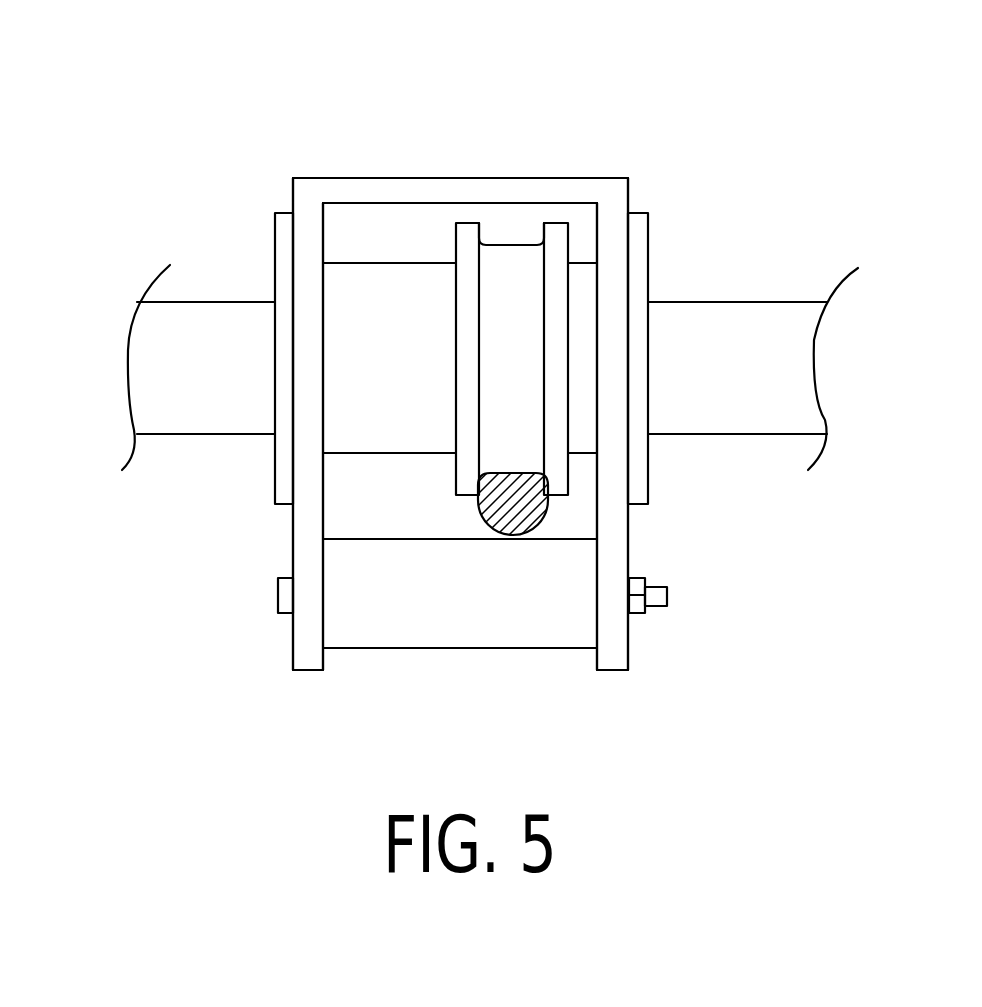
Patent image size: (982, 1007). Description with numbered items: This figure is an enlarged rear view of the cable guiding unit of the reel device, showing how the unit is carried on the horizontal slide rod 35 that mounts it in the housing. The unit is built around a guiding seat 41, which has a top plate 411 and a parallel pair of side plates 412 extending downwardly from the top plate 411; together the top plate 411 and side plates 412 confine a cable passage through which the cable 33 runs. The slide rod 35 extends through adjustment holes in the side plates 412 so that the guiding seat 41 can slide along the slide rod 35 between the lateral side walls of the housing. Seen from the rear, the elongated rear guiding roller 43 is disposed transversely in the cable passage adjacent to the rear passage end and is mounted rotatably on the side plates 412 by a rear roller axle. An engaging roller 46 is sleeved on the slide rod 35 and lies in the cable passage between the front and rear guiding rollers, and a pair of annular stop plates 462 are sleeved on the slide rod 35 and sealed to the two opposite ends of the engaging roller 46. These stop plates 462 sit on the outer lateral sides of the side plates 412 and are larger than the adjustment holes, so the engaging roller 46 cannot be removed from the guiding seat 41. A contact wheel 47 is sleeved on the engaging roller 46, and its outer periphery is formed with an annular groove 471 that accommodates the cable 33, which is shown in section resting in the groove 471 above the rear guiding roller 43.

The cable 33 is at (507, 513).
The horizontal slide rod 35 is at (768, 392).
The guiding seat 41 is at (503, 177).
The top plate 411 is at (408, 183).
The side plates 412 is at (313, 527).
The rear guiding roller 43 is at (382, 630).
The engaging roller 46 is at (352, 267).
The annular stop plates 462 is at (277, 228).
The contact wheel 47 is at (557, 225).
The annular groove 471 is at (515, 243).